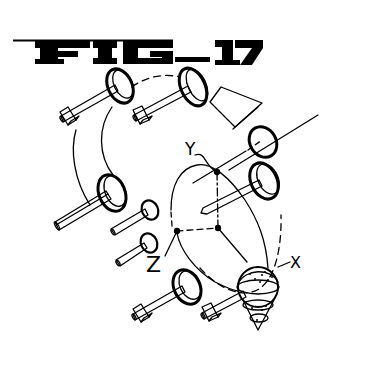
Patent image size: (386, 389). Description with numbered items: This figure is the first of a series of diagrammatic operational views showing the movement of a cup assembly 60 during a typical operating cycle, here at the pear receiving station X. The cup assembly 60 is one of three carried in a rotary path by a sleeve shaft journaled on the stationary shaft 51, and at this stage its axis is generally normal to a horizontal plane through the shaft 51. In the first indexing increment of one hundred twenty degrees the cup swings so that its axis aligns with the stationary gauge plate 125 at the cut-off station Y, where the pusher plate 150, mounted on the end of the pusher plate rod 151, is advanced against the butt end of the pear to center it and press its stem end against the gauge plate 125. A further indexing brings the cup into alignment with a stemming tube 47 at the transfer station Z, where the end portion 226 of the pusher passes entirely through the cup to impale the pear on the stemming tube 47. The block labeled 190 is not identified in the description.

The stemming tube 47 is at (184, 92).
The stationary shaft 51 is at (267, 212).
The cup assembly 60 is at (283, 290).
The gauge plate 125 is at (266, 148).
The pusher plate 150 is at (153, 201).
The pusher plate rod 151 is at (105, 223).
The block 190 is at (238, 95).
The end portion of the pusher 226 is at (137, 262).